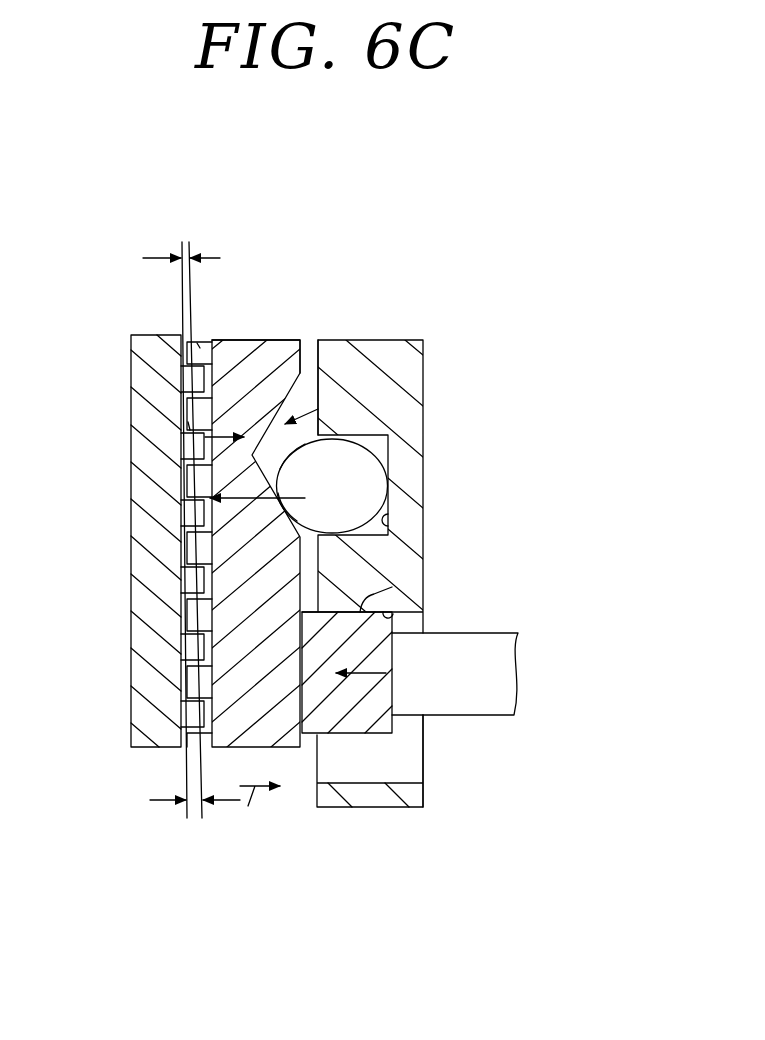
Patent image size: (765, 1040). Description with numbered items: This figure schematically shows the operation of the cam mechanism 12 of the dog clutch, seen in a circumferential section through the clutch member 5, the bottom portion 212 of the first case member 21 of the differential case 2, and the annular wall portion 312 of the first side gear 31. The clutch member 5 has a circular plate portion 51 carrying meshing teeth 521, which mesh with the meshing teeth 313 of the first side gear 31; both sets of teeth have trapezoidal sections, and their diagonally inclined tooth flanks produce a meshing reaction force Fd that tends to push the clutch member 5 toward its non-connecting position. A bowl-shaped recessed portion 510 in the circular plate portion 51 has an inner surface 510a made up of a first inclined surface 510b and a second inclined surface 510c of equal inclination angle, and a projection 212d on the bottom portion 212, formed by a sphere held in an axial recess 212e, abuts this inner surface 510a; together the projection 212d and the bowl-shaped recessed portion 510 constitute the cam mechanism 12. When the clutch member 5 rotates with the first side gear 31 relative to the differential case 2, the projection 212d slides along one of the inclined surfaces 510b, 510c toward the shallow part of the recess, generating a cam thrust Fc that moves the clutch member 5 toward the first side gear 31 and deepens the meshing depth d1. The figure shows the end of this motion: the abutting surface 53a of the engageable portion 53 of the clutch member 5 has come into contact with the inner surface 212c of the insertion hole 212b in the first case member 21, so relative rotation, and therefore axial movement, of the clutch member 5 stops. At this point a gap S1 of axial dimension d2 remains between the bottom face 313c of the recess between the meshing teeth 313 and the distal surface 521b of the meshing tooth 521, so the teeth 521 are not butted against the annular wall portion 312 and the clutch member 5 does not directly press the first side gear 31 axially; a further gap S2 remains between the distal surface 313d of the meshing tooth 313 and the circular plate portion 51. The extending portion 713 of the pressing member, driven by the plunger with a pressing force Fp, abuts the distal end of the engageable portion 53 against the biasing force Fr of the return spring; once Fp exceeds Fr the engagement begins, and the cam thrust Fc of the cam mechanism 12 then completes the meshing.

The first side gear 31 is at (164, 544).
The annular wall portion 312 is at (140, 691).
The meshing tooth 313 is at (164, 504).
The bottom face 313c is at (186, 381).
The distal surface 313d is at (211, 400).
The clutch member 5 is at (191, 574).
The circular plate portion 51 is at (284, 356).
The meshing tooth 521 is at (123, 544).
The distal surface 521b is at (200, 432).
The bowl-shaped recessed portion 510 is at (436, 429).
The inner surface 510a is at (436, 466).
The first inclined surface 510b is at (262, 532).
The second inclined surface 510c is at (300, 449).
The cam mechanism 12 is at (432, 398).
The bottom portion 212 is at (282, 590).
The insertion hole 212b is at (413, 757).
The inner surface 212c is at (394, 619).
The projection 212d is at (305, 477).
The axial recess 212e is at (392, 519).
The first case member 21 is at (429, 807).
The differential case 2 is at (282, 590).
The engageable portion 53 is at (408, 657).
The abutting surface 53a is at (392, 587).
The extending portion 713 is at (462, 693).
The meshing depth d1 is at (195, 826).
The axial dimension of gap S1 d2 is at (181, 234).
The gap S1 is at (189, 426).
The gap S2 is at (197, 345).
The meshing reaction force Fd is at (261, 414).
The cam thrust Fc is at (257, 526).
The pressing force Fp is at (361, 699).
The biasing force Fr is at (256, 816).